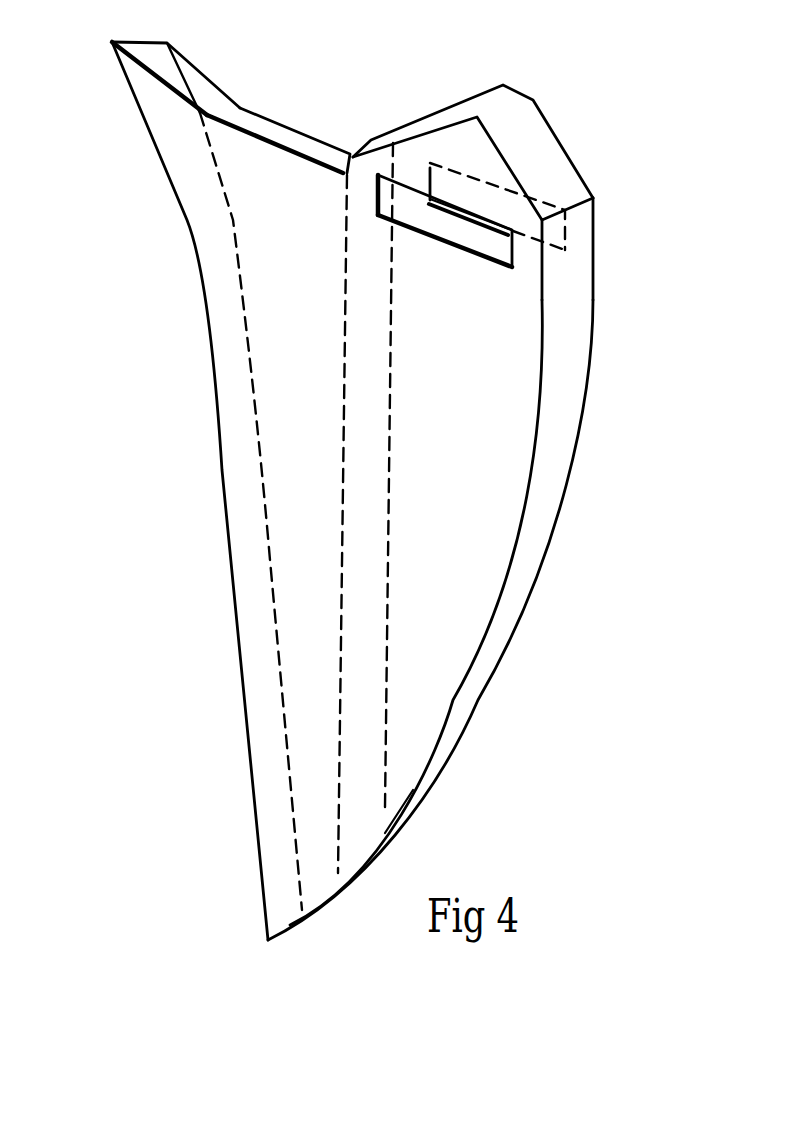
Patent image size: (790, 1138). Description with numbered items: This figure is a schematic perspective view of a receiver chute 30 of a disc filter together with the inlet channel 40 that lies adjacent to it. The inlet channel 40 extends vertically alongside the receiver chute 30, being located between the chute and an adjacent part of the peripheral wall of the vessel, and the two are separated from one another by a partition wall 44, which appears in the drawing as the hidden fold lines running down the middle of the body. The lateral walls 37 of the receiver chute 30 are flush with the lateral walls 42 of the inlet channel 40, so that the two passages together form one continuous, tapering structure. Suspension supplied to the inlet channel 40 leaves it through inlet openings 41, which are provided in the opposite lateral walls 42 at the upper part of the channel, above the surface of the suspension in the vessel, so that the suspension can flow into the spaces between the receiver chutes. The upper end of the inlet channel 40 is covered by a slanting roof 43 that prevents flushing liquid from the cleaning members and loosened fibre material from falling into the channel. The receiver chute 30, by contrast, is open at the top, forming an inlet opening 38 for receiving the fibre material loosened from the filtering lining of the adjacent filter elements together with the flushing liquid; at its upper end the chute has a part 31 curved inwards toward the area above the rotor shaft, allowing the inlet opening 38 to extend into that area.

The receiver chute 30 is at (237, 477).
The part curved inwards 31 is at (142, 77).
The lateral walls 37 is at (257, 153).
The inlet opening 38 is at (283, 135).
The inlet channel 40 is at (513, 423).
The inlet openings 41 is at (555, 230).
The lateral walls 42 is at (527, 290).
The slanting roof 43 is at (460, 112).
The partition wall 44 is at (373, 375).